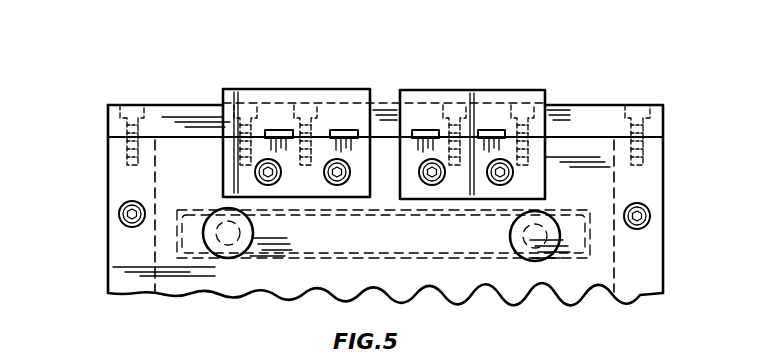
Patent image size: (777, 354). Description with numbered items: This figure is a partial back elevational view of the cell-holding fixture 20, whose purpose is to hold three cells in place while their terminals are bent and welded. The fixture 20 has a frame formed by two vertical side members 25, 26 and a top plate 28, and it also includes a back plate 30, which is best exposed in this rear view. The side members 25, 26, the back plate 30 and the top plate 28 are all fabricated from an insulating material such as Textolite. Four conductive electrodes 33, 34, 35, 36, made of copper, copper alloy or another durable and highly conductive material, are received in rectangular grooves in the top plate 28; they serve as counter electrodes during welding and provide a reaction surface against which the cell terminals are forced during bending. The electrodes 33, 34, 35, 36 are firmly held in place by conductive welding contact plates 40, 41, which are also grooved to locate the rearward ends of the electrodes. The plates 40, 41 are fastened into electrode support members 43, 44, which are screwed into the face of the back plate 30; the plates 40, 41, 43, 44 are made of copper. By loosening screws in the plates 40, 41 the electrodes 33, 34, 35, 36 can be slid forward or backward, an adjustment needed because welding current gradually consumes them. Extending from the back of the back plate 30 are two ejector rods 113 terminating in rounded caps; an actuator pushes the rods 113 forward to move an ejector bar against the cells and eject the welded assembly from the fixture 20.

The cell-holding fixture 20 is at (665, 164).
The vertical side member 25 is at (650, 253).
The vertical side member 26 is at (123, 245).
The top plate 28 is at (587, 114).
The back plate 30 is at (202, 192).
The electrode 33 is at (491, 130).
The electrode 34 is at (427, 130).
The electrode 35 is at (343, 130).
The electrode 36 is at (273, 128).
The conductive welding contact plate 40 is at (485, 90).
The conductive welding contact plate 41 is at (320, 89).
The electrode support member 43 is at (312, 189).
The electrode support member 44 is at (477, 189).
The ejector rod 113 is at (228, 259).